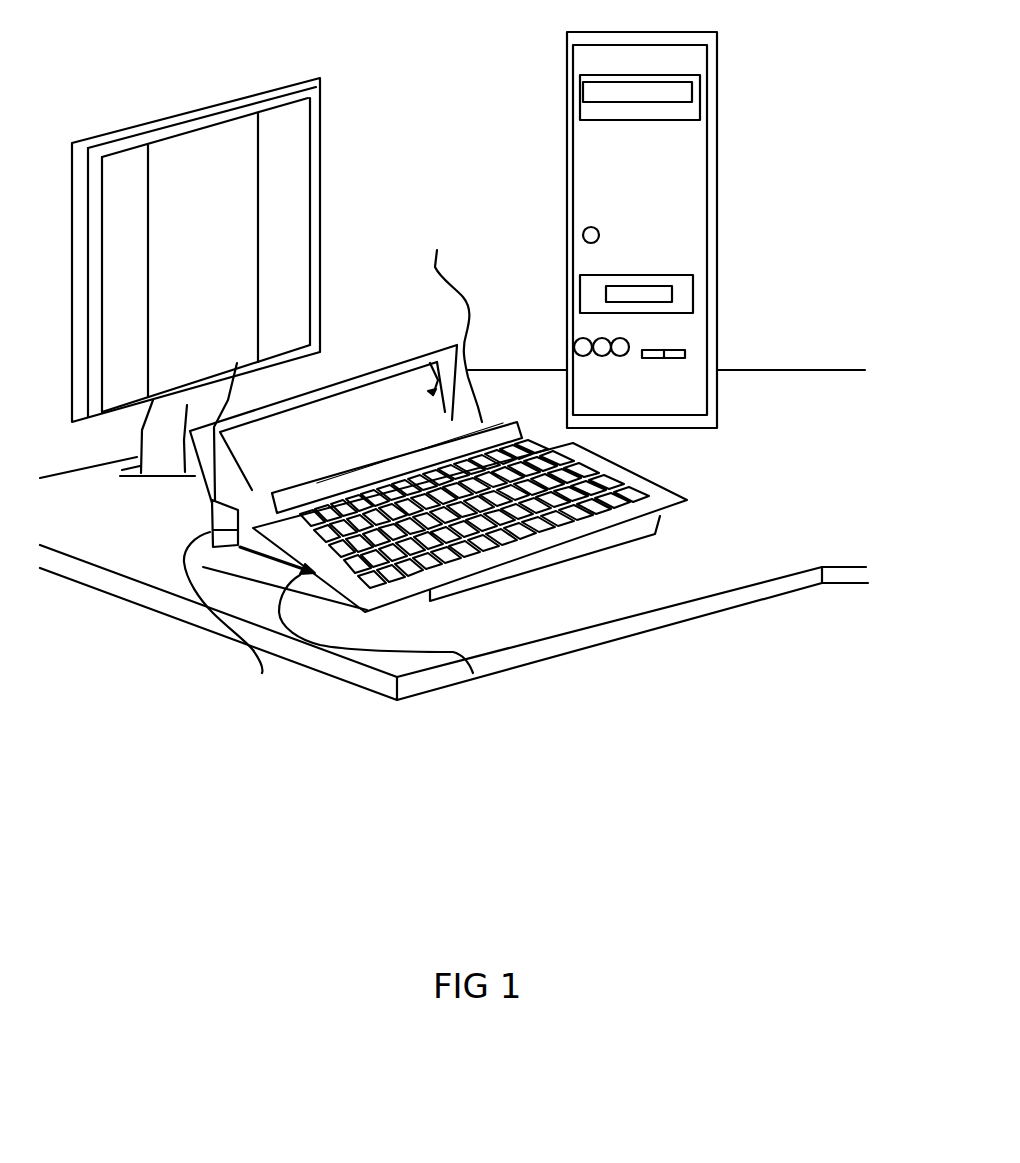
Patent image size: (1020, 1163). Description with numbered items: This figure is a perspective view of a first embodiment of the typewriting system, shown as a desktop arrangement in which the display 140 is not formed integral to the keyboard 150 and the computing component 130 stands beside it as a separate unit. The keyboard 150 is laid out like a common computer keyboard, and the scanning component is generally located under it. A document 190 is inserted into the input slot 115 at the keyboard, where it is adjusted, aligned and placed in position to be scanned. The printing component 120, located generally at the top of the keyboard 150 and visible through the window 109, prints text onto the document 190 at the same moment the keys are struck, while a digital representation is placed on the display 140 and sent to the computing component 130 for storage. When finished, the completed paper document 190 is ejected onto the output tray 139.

The window 109 is at (513, 433).
The input slot 115 is at (628, 538).
The printing component 120 is at (262, 672).
The computing component 130 is at (592, 162).
The output tray 139 is at (212, 500).
The display 140 is at (285, 225).
The keyboard 150 is at (617, 462).
The document 190 is at (437, 250).